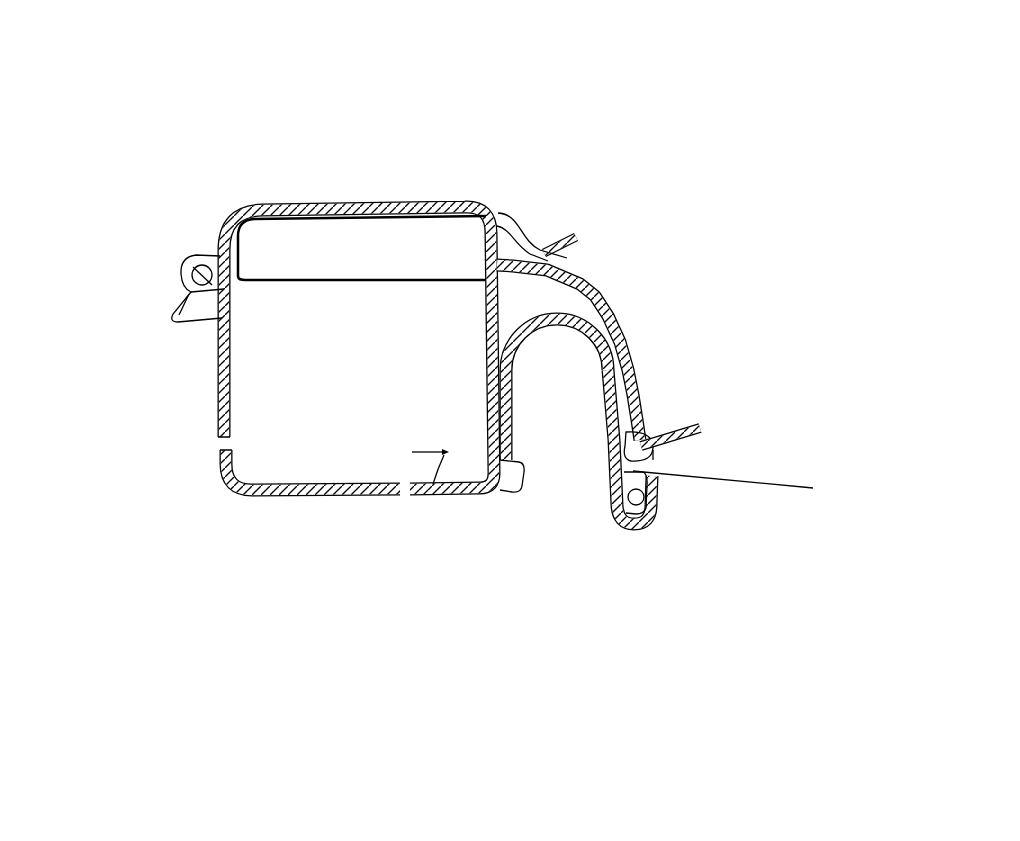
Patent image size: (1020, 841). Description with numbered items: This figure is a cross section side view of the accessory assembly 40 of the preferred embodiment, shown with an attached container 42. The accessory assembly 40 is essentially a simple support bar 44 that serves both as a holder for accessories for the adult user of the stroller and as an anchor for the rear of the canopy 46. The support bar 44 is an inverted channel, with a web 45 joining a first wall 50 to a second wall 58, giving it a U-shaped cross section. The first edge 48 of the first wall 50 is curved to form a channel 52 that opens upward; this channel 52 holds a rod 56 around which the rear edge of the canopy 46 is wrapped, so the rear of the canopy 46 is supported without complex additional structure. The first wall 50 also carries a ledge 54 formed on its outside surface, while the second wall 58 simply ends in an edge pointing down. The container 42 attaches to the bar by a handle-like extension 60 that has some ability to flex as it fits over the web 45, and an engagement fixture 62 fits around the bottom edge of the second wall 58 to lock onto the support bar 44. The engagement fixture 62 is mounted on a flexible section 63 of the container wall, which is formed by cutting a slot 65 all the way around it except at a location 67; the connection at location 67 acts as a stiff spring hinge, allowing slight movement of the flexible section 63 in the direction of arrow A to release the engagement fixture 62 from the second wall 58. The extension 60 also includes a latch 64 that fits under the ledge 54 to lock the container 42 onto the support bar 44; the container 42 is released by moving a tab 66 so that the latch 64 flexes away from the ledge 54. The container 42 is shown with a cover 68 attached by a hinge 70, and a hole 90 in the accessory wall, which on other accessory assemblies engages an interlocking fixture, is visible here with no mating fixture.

The accessory assembly 40 is at (268, 105).
The container 42 is at (218, 373).
The support bar 44 is at (583, 287).
The web 45 is at (537, 316).
The canopy 46 is at (760, 487).
The first edge 48 is at (656, 485).
The first wall 50 is at (603, 417).
The channel 52 is at (650, 530).
The ledge 54 is at (637, 420).
The rod 56 is at (657, 523).
The second wall 58 is at (510, 412).
The extension 60 is at (600, 300).
The engagement fixture 62 is at (503, 497).
The flexible section 63 is at (438, 495).
The latch 64 is at (654, 455).
The slot 65 is at (398, 496).
The tab 66 is at (701, 430).
The location 67 is at (490, 433).
The cover 68 is at (295, 202).
The hinge 70 is at (196, 262).
The hole 90 is at (228, 441).